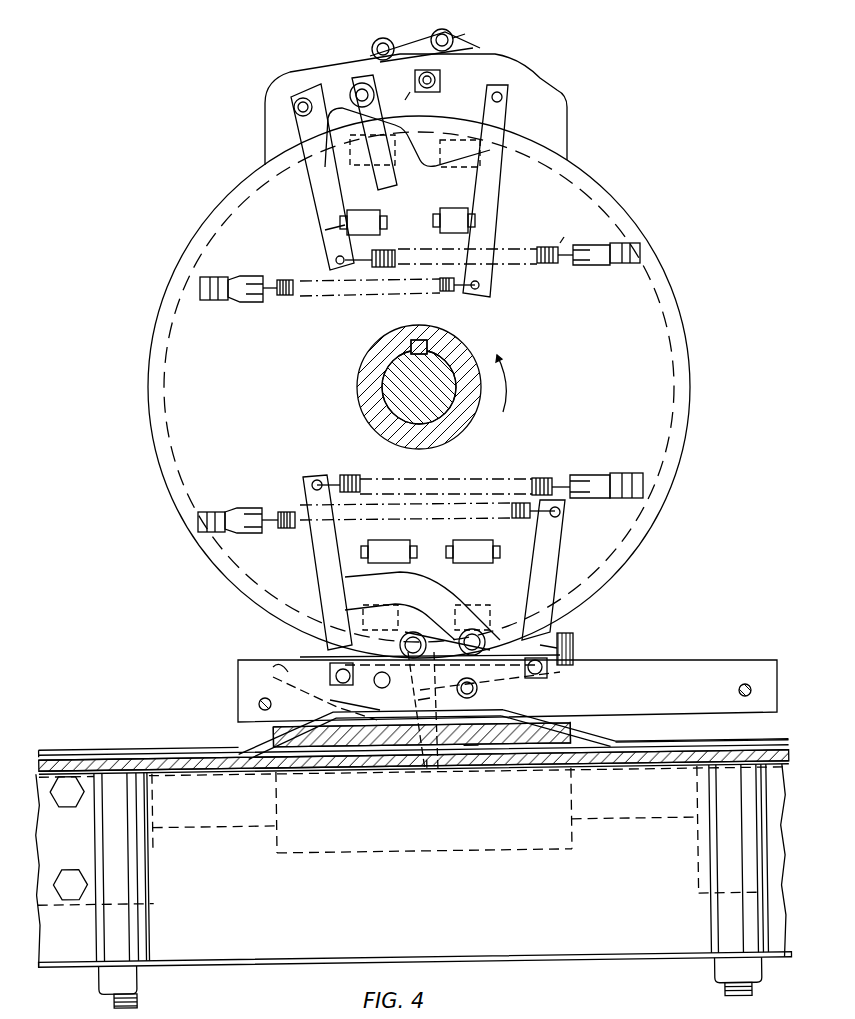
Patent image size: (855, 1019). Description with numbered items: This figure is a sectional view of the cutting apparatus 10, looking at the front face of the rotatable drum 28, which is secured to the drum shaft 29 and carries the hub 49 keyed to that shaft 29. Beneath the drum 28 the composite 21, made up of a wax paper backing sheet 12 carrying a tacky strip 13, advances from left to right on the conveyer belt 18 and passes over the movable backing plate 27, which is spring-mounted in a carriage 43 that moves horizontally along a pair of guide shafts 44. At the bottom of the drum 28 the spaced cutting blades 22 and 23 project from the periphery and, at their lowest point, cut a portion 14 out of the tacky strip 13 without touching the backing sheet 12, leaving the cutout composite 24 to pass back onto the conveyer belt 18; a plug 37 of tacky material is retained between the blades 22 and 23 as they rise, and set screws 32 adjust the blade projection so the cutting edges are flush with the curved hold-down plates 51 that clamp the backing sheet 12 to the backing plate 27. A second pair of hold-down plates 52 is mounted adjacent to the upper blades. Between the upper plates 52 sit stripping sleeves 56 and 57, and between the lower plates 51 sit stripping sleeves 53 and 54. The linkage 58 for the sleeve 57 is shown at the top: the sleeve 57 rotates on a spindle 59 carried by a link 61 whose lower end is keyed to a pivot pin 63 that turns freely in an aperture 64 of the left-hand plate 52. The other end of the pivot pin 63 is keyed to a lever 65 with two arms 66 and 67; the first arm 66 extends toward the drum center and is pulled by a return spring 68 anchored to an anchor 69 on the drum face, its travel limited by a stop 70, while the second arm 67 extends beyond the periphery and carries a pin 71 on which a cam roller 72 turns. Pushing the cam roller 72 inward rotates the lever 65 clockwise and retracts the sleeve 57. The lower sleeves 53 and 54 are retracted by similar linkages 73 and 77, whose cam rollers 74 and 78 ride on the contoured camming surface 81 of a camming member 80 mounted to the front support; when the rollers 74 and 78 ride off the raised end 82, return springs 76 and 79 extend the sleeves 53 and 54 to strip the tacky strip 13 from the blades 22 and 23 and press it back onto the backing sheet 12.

The cutting apparatus 10 is at (640, 104).
The backing sheet 12 is at (56, 757).
The tacky strip 13 is at (74, 755).
The portion 14 is at (431, 774).
The conveyer belt 18 is at (213, 757).
The composite 21 is at (160, 740).
The cutting blade 22 is at (469, 766).
The cutting blade 23 is at (380, 762).
The cutout composite 24 is at (622, 740).
The backing plate 27 is at (308, 750).
The drum 28 is at (685, 300).
The shaft 29 is at (397, 370).
The set screws 32 is at (388, 605).
The plug 37 is at (413, 743).
The carriage 43 is at (548, 850).
The guide shafts 44 is at (655, 827).
The hub 49 is at (446, 343).
The hold-down plates 51 is at (574, 636).
The hold-down plates 52 is at (565, 133).
The stripping sleeve 53 is at (478, 688).
The stripping sleeve 54 is at (355, 703).
The stripping sleeve 56 is at (386, 40).
The stripping sleeve 57 is at (420, 34).
The linkage 58 is at (290, 145).
The spindle 59 is at (482, 45).
The link 61 is at (362, 60).
The pivot pin 63 is at (300, 95).
The aperture 64 is at (290, 110).
The lever 65 is at (312, 200).
The arm 66 is at (322, 217).
The arm 67 is at (322, 98).
The return spring 68 is at (556, 246).
The anchor 69 is at (615, 265).
The stop 70 is at (347, 210).
The pin 71 is at (435, 90).
The cam roller 72 is at (456, 74).
The linkage 73 is at (312, 568).
The cam roller 74 is at (472, 628).
The return spring 76 is at (551, 478).
The linkage 77 is at (562, 567).
The cam roller 78 is at (430, 671).
The return spring 79 is at (296, 534).
The camming member 80 is at (250, 690).
The camming surface 81 is at (292, 674).
The raised end 82 is at (556, 645).